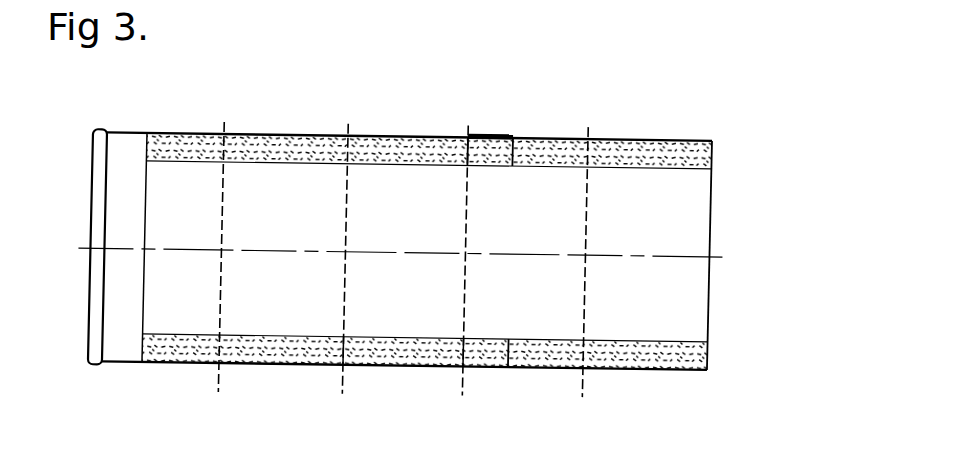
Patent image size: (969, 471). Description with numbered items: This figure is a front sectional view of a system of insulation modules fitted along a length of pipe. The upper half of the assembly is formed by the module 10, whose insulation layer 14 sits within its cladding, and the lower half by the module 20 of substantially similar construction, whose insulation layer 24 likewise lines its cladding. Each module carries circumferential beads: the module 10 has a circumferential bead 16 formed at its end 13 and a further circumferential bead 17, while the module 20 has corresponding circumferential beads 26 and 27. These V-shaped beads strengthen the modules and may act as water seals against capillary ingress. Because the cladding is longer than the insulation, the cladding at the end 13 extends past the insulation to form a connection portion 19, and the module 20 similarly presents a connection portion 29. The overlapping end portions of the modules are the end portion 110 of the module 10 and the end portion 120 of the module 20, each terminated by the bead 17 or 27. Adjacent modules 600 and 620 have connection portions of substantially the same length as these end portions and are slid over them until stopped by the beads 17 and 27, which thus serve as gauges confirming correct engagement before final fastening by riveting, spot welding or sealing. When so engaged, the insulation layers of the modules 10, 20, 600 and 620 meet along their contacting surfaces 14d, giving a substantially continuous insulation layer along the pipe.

The insulation module 10 is at (185, 128).
The circumferential bead 16 is at (100, 130).
The insulation layer 14 is at (402, 144).
The insulation layer 24 is at (172, 348).
The circumferential bead 26 is at (88, 365).
The connection portion 19 is at (515, 137).
The circumferential bead 17 is at (470, 138).
The overlapping end portion 110 is at (502, 137).
The adjacent module 600 is at (528, 152).
The contacting surfaces 14d is at (517, 160).
The end of module 13 is at (347, 336).
The connection portion 29 is at (483, 335).
The circumferential bead 27 is at (455, 367).
The insulation module 20 is at (287, 365).
The overlapping end portion 120 is at (525, 368).
The adjacent module 620 is at (553, 375).